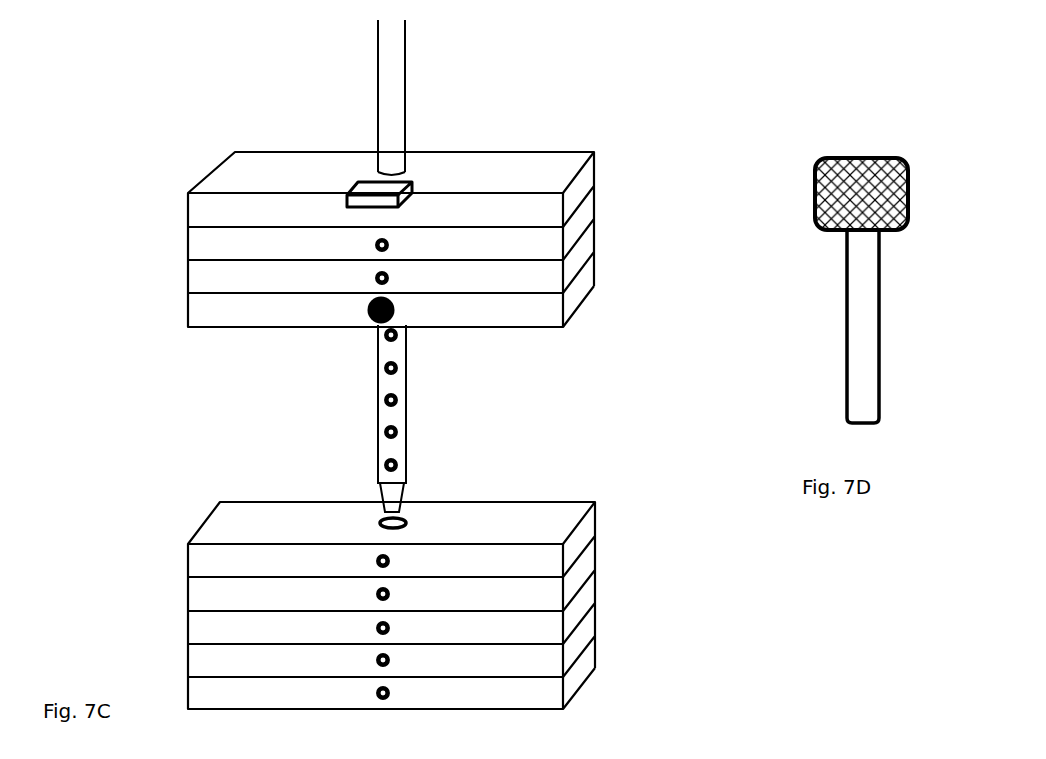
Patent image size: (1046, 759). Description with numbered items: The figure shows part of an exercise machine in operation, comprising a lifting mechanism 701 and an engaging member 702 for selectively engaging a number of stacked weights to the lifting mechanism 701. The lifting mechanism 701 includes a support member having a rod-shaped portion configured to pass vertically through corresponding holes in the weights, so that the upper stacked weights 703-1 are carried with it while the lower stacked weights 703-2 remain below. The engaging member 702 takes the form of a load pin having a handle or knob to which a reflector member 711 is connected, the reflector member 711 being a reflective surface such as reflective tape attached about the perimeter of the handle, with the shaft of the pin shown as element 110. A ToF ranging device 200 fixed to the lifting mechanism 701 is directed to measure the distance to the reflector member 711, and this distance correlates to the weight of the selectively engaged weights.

In FIG. 7C, the lifting mechanism 701 is at (395, 110).
In FIG. 7C, the ToF ranging device 200 is at (355, 185).
In FIG. 7C, the stacked weights 703-1 is at (604, 240).
In FIG. 7C, the engaging member 702 is at (392, 310).
In FIG. 7D, the engaging member 702 is at (853, 273).
In FIG. 7C, the stacked weights 703-2 is at (607, 621).
In FIG. 7D, the reflector member 711 is at (808, 198).
In FIG. 7D, the tool handle / shaft 110 is at (853, 390).